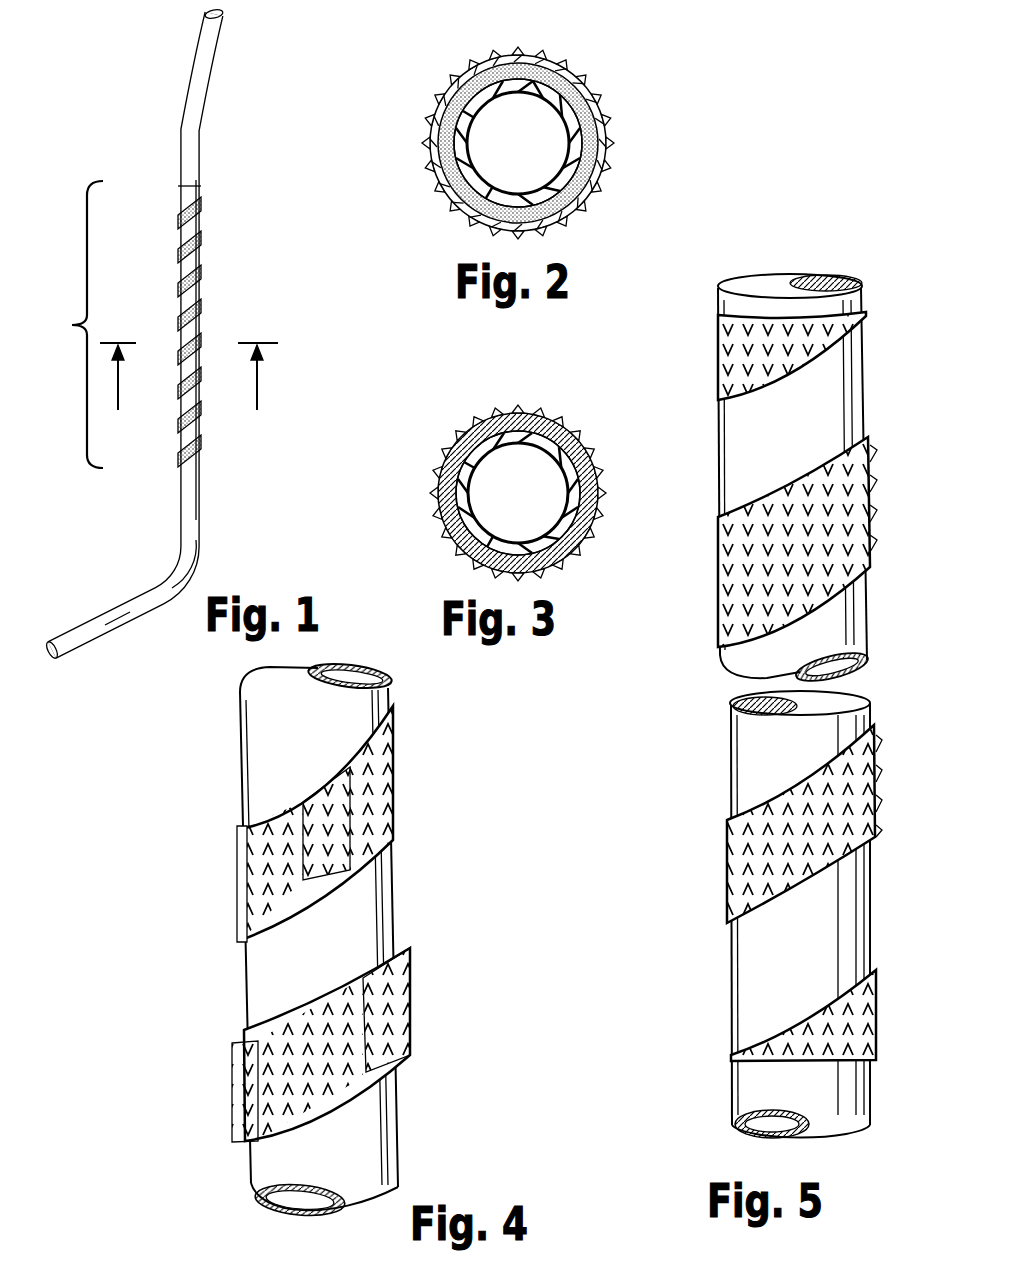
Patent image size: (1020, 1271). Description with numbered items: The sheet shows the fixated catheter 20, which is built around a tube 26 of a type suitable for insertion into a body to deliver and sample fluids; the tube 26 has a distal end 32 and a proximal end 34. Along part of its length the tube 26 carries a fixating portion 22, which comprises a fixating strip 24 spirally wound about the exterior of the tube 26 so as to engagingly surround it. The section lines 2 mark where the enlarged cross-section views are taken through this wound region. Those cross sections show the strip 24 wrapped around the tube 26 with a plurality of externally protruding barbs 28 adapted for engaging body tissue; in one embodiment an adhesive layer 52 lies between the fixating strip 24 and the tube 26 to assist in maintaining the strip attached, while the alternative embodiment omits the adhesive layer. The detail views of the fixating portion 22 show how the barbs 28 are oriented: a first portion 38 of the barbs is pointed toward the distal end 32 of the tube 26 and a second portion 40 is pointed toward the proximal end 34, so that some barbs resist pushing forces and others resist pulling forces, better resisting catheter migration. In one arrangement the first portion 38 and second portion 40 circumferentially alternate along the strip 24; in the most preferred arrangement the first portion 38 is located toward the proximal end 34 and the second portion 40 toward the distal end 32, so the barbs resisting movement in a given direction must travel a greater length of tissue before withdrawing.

In FIG. 1, the fixated catheter 20 is at (158, 130).
In FIG. 2, the fixated catheter 20 is at (442, 56).
In FIG. 3, the fixated catheter 20 is at (450, 412).
In FIG. 1, the fixating portion 22 is at (64, 324).
In FIG. 1, the fixating strip 24 is at (201, 210).
In FIG. 2, the fixating strip 24 is at (614, 135).
In FIG. 4, the fixating strip 24 is at (394, 722).
In FIG. 5, the fixating strip 24 is at (728, 880).
In FIG. 1, the tube 26 is at (200, 104).
In FIG. 2, the tube 26 is at (592, 190).
In FIG. 3, the tube 26 is at (440, 500).
In FIG. 4, the tube 26 is at (246, 758).
In FIG. 5, the tube 26 is at (752, 440).
In FIG. 2, the barbs 28 is at (560, 85).
In FIG. 3, the barbs 28 is at (570, 442).
In FIG. 1, the distal end 32 is at (180, 83).
In FIG. 1, the proximal end 34 is at (90, 625).
In FIG. 4, the first portion of barbs 38 is at (252, 858).
In FIG. 5, the first portion of barbs 38 is at (695, 876).
In FIG. 4, the second portion of barbs 40 is at (354, 812).
In FIG. 5, the second portion of barbs 40 is at (712, 578).
In FIG. 2, the adhesive layer 52 is at (590, 112).
In FIG. 1, the section line 2- 2 is at (190, 389).